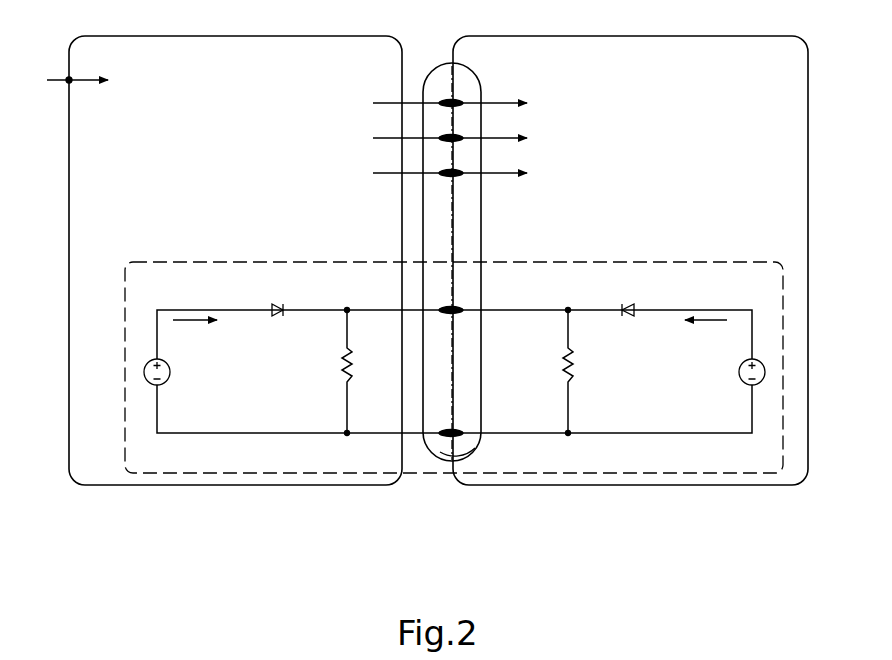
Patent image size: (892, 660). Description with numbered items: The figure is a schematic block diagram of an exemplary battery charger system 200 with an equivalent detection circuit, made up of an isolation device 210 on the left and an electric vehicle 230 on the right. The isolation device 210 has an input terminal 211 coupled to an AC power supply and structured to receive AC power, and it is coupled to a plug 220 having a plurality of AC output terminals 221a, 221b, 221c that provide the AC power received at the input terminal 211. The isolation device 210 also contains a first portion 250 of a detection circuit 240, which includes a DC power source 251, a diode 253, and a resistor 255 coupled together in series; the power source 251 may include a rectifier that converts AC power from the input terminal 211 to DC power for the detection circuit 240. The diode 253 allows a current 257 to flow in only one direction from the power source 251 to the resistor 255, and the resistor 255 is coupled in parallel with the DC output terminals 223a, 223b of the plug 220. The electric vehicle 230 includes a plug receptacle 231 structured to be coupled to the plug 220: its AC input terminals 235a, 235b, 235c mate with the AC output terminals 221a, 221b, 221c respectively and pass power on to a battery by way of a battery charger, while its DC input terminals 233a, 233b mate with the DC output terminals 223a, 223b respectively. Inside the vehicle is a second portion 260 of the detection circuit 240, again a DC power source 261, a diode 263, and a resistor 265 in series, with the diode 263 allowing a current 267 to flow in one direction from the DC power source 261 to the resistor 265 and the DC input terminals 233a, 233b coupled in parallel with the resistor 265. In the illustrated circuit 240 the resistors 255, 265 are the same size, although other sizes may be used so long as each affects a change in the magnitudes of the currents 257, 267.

The battery charger system 200 is at (288, 545).
The isolation device 210 is at (200, 487).
The input terminal 211 is at (69, 78).
The plug 220 is at (427, 455).
The AC output terminal 221a is at (445, 101).
The AC output terminal 221b is at (445, 136).
The AC output terminal 221c is at (445, 171).
The DC output terminal 223a is at (446, 308).
The DC output terminal 223b is at (446, 431).
The electric vehicle 230 is at (535, 487).
The plug receptacle 231 is at (475, 450).
The DC input terminal 233a is at (455, 308).
The DC input terminal 233b is at (455, 431).
The AC input terminal 235a is at (456, 101).
The AC input terminal 235b is at (456, 136).
The AC input terminal 235c is at (456, 171).
The detection circuit 240 is at (640, 262).
The first portion of detection circuit 250 is at (315, 437).
The DC power source 251 is at (170, 372).
The diode 253 is at (278, 316).
The resistor 255 is at (344, 380).
The current 257 is at (196, 321).
The second portion of detection circuit 260 is at (683, 437).
The DC power source 261 is at (739, 372).
The diode 263 is at (628, 316).
The resistor 265 is at (571, 380).
The current 267 is at (705, 321).